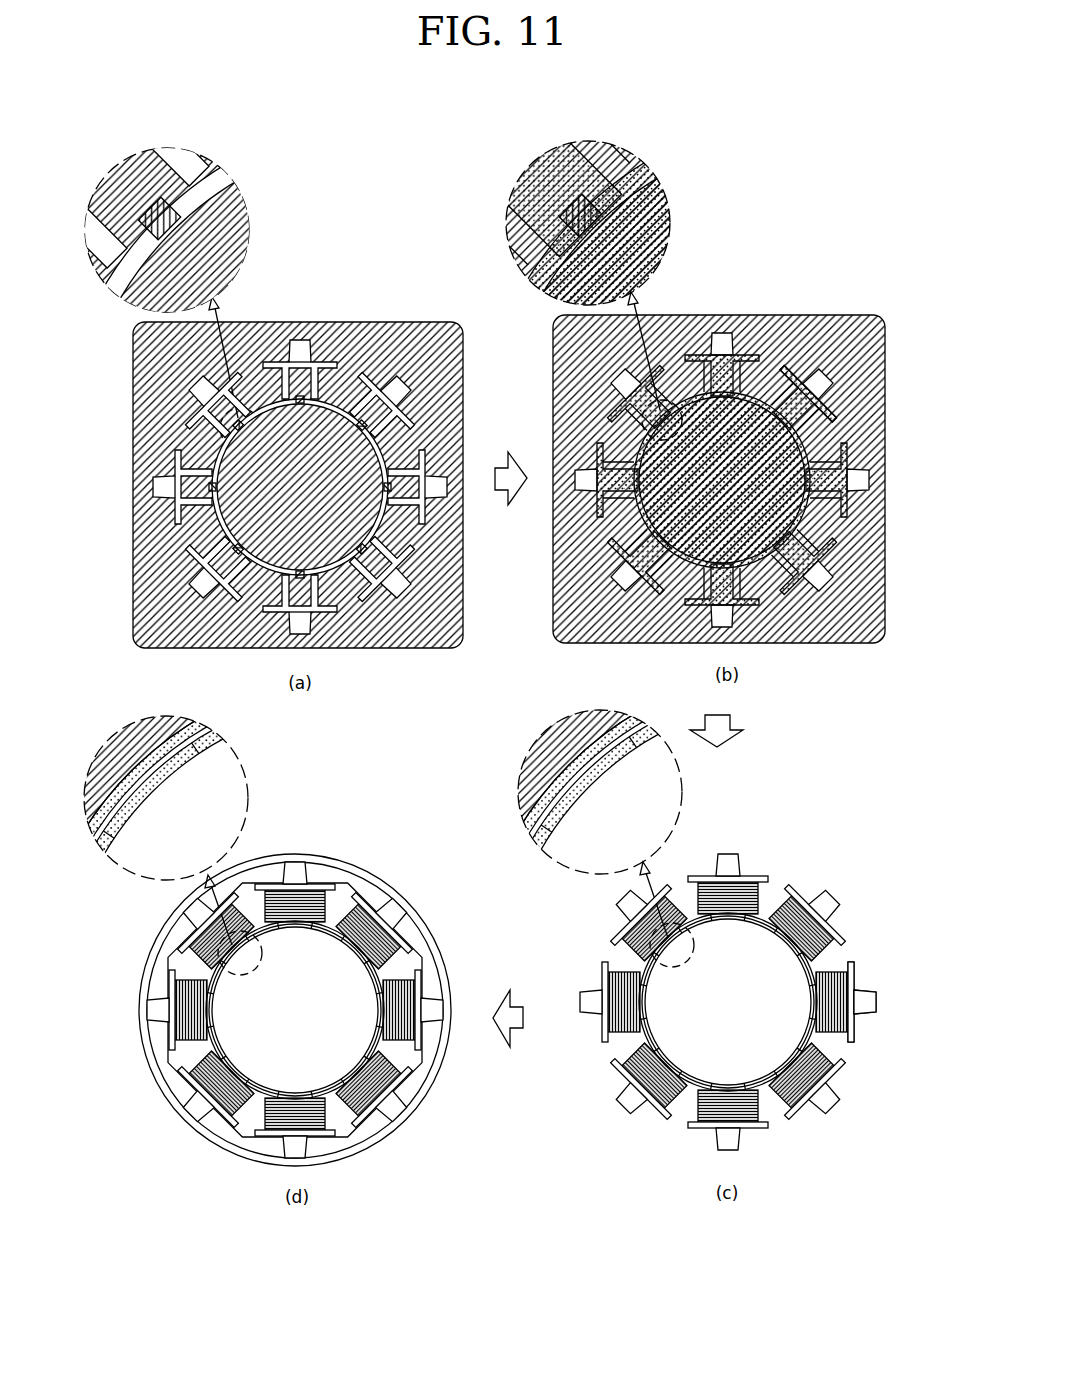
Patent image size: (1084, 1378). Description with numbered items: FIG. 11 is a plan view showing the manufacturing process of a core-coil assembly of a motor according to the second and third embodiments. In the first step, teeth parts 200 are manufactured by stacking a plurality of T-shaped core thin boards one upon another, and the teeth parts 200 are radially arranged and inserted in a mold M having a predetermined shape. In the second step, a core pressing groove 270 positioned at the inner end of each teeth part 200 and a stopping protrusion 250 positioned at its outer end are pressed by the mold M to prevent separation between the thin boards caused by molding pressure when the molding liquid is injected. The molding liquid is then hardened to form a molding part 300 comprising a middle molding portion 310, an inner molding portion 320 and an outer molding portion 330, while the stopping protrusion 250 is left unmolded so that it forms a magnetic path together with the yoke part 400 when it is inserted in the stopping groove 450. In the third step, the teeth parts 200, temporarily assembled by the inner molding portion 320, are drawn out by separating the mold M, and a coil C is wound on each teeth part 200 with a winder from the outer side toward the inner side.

The teeth parts 200 is at (153, 185).
The mold M is at (233, 238).
The molding part 300 is at (538, 190).
The middle molding portion 310 is at (778, 380).
The inner molding portion 320 is at (685, 415).
The outer molding portion 330 is at (800, 380).
The core pressing groove 270 is at (183, 798).
The stopping protrusion 250 is at (298, 863).
The coil C is at (317, 897).
The yoke part 400 is at (367, 887).
The stopping groove 450 is at (287, 857).